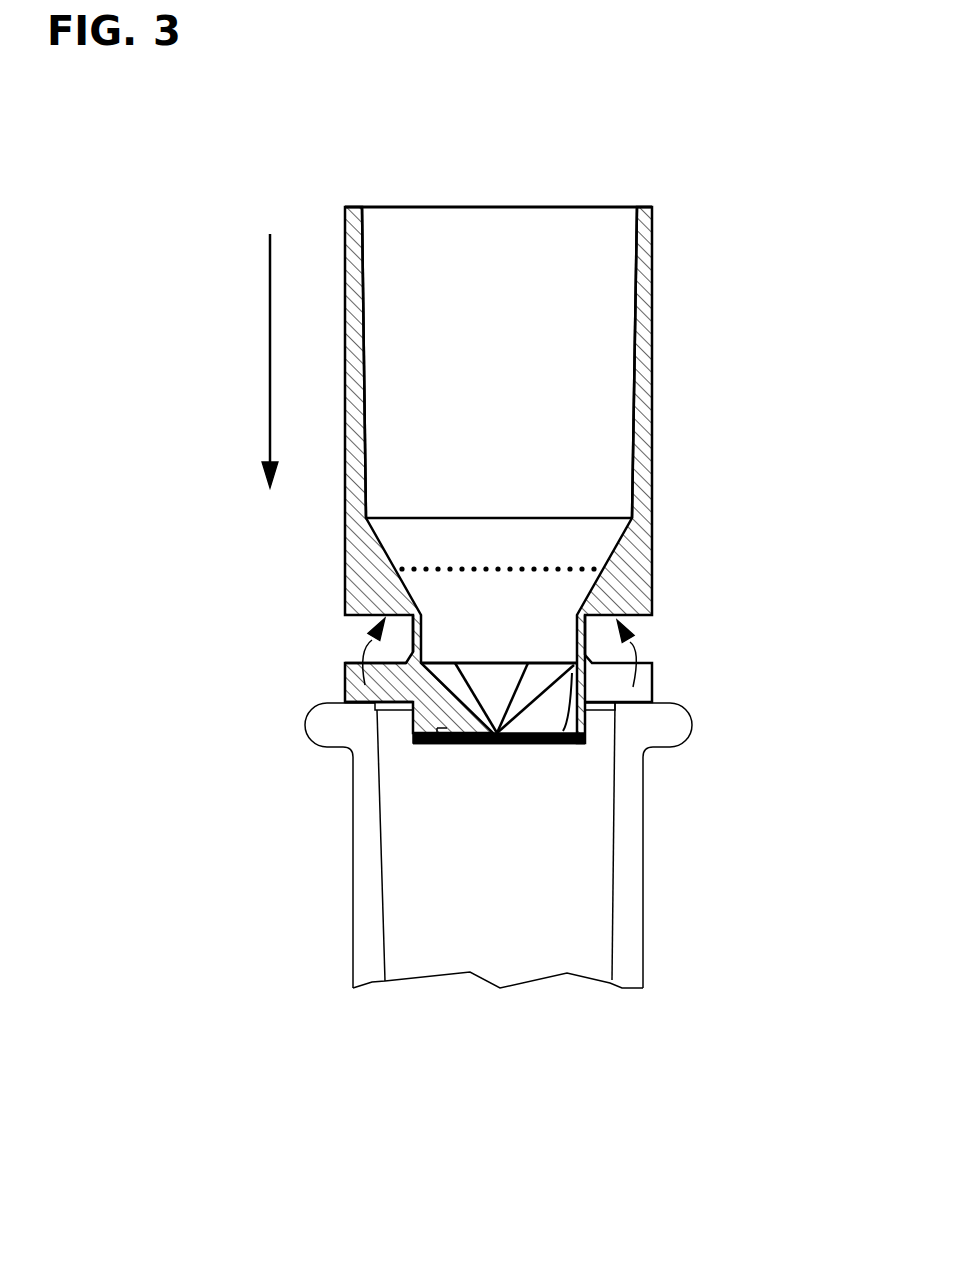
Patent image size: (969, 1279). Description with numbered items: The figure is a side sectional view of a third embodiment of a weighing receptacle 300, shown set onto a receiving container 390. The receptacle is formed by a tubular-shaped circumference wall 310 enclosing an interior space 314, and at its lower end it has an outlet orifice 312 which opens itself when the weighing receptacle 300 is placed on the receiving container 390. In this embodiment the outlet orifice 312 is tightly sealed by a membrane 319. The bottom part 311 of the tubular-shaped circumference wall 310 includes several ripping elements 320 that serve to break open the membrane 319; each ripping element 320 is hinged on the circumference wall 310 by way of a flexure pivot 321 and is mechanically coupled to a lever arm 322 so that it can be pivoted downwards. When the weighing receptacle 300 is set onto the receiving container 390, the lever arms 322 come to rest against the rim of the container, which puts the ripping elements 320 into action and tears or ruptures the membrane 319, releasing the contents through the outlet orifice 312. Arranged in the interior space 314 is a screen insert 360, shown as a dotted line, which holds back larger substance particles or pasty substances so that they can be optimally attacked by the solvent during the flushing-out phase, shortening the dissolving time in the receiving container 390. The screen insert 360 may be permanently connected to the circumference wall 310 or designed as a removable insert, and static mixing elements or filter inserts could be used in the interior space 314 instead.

The weighing receptacle 300 is at (505, 602).
The tubular-shaped circumference wall 310 is at (642, 388).
The interior space 314 is at (540, 317).
The screen insert 360 is at (527, 569).
The lever arm 322 is at (642, 678).
The flexure pivot 321 is at (418, 640).
The ripping element 320 is at (547, 712).
The membrane 319 is at (582, 745).
The outlet orifice 312 is at (481, 769).
The bottom part 311 is at (383, 726).
The receiving container 390 is at (628, 833).